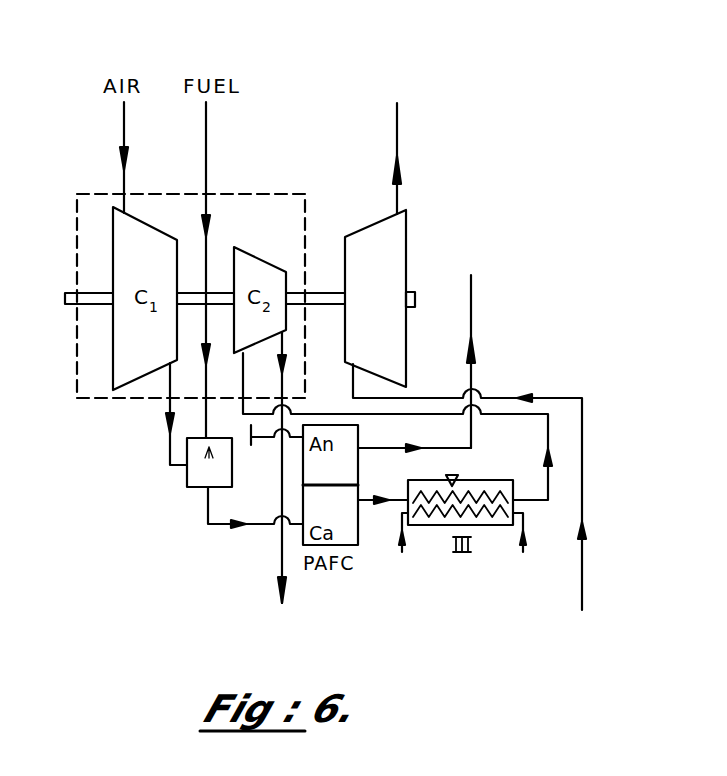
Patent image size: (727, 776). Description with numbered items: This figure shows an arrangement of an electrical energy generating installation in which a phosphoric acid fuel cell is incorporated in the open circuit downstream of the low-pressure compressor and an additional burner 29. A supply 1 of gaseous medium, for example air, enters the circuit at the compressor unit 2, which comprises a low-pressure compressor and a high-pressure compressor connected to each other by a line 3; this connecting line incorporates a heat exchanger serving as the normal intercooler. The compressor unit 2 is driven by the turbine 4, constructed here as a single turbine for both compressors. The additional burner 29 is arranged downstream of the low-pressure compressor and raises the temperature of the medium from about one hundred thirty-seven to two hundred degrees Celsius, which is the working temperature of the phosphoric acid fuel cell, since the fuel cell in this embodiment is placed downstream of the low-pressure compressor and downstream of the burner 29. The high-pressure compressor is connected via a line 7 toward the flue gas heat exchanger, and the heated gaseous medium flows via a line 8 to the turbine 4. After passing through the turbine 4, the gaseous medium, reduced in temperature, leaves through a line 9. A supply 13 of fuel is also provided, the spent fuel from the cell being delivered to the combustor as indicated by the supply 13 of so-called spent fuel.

The supply of gaseous medium 1 is at (124, 131).
The compressor unit 2 is at (77, 243).
The line 3 is at (170, 437).
The turbine 4 is at (406, 246).
The line 7 is at (282, 491).
The line 8 is at (420, 398).
The line 9 is at (397, 135).
The supply of spent fuel 13 is at (206, 157).
The additional burner 29 is at (187, 482).